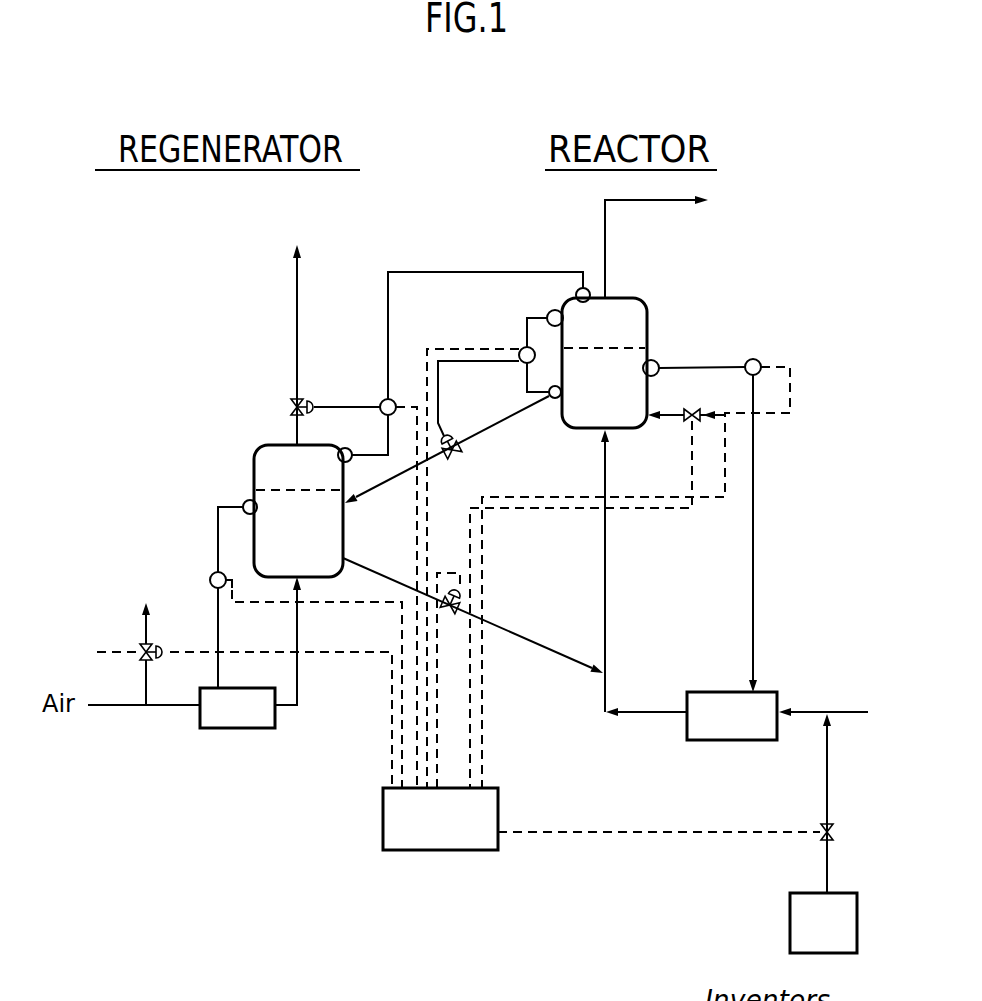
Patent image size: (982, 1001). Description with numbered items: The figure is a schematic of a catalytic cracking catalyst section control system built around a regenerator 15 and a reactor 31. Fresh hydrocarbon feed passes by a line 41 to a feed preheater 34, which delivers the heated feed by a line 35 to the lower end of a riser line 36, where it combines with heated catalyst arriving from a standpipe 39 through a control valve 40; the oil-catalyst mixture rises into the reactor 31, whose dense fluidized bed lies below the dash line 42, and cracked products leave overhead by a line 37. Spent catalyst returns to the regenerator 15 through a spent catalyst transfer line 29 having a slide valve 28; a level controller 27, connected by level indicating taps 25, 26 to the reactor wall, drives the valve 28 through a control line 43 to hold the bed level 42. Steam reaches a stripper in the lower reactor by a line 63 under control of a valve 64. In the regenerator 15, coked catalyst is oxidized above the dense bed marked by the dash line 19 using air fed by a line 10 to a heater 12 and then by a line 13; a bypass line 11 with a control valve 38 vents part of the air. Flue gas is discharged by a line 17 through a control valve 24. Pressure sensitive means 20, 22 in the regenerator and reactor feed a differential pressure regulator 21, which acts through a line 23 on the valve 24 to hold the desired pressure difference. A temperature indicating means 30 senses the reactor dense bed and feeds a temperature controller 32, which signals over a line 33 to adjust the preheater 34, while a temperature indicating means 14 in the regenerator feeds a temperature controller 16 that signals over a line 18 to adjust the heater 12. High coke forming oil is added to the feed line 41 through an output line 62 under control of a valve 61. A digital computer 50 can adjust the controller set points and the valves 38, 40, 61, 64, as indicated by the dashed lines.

The line 10 is at (176, 706).
The bypass line 11 is at (146, 680).
The heater 12 is at (253, 730).
The line 13 is at (298, 632).
The temperature indicating means 14 is at (247, 502).
The regenerator 15 is at (255, 448).
The temperature controller 16 is at (212, 574).
The line 17 is at (296, 329).
The line 18 is at (216, 621).
The dash line 19 is at (303, 493).
The pressure sensitive means 20 is at (350, 450).
The differential pressure regulator 21 is at (384, 398).
The pressure sensitive means 22 is at (584, 288).
The line 23 is at (334, 400).
The control valve 24 is at (290, 405).
The level indicating tap 25 is at (552, 312).
The level indicating tap 26 is at (552, 398).
The level controller 27 is at (522, 348).
The control valve 28 is at (447, 433).
The spent catalyst transfer line 29 is at (491, 440).
The temperature indicating means 30 is at (657, 374).
The reactor 31 is at (648, 308).
The temperature controller 32 is at (757, 360).
The line 33 is at (755, 517).
The feed preheater 34 is at (750, 742).
The line 35 is at (648, 714).
The riser line 36 is at (607, 540).
The line 37 is at (606, 262).
The control valve 38 is at (140, 648).
The standpipe 39 is at (532, 648).
The control valve 40 is at (462, 592).
The line 41 is at (824, 712).
The dash line 42 is at (620, 346).
The control line 43 is at (448, 348).
The digital computer 50 is at (456, 827).
The valve 61 is at (832, 835).
The output line 62 is at (828, 787).
The line 63 is at (665, 418).
The valve 64 is at (690, 422).